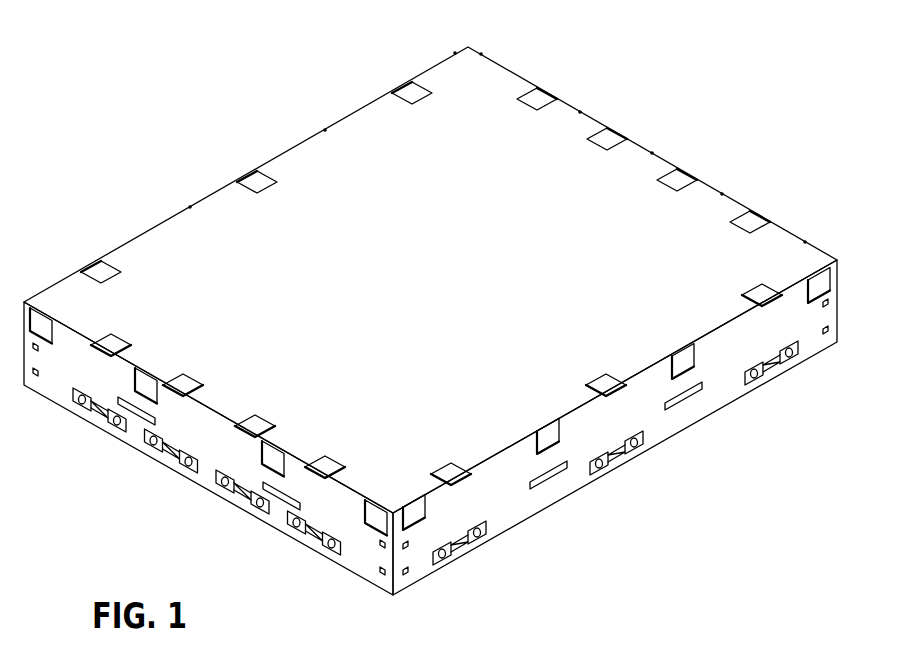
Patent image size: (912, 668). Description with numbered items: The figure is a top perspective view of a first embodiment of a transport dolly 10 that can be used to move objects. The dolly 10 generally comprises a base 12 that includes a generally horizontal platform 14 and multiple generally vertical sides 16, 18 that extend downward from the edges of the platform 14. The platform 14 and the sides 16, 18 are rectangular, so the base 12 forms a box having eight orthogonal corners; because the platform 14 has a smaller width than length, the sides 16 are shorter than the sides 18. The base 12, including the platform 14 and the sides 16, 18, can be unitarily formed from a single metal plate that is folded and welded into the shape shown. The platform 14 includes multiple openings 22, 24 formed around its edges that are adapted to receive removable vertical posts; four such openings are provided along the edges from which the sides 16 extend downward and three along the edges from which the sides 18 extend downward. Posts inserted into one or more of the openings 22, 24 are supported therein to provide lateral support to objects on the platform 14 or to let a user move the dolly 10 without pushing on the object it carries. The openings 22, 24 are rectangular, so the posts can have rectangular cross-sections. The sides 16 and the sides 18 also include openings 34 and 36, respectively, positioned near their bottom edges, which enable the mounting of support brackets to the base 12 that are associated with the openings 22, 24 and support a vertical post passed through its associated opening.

The transport dolly 10 is at (703, 66).
The base 12 is at (794, 221).
The platform 14 is at (385, 167).
The sides 16 is at (360, 562).
The sides 18 is at (505, 519).
The openings 22 is at (538, 98).
The openings 24 is at (410, 90).
The openings 34 is at (98, 422).
The openings 36 is at (470, 558).